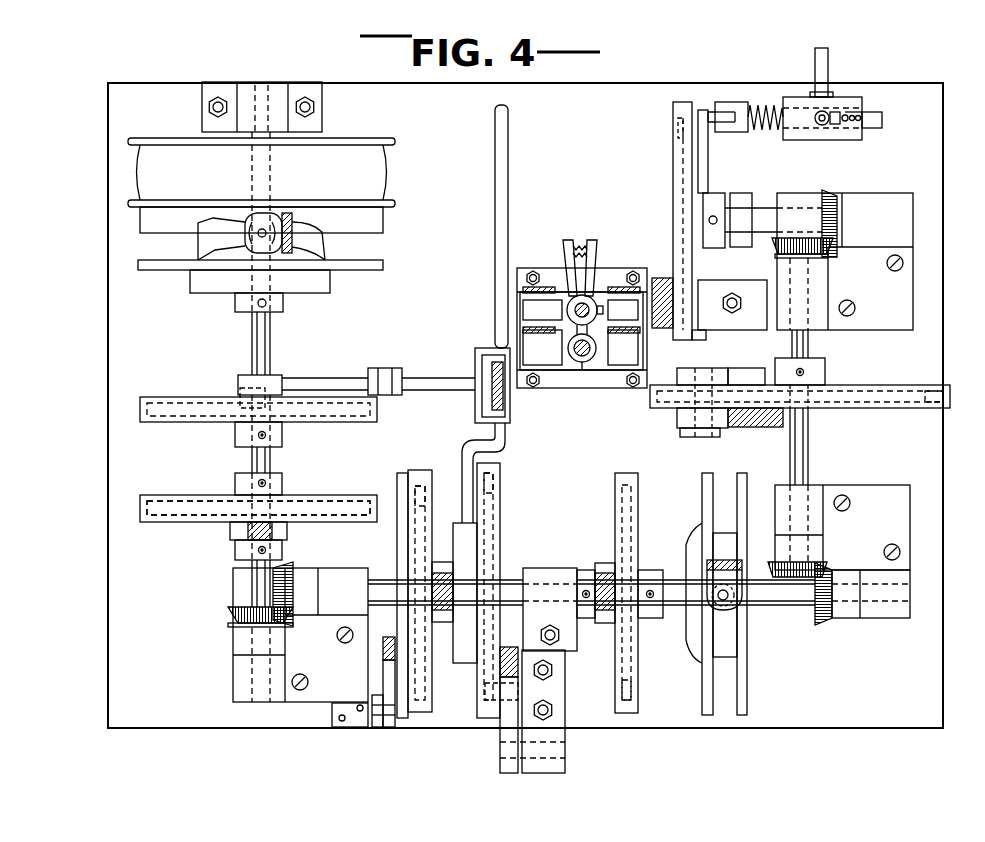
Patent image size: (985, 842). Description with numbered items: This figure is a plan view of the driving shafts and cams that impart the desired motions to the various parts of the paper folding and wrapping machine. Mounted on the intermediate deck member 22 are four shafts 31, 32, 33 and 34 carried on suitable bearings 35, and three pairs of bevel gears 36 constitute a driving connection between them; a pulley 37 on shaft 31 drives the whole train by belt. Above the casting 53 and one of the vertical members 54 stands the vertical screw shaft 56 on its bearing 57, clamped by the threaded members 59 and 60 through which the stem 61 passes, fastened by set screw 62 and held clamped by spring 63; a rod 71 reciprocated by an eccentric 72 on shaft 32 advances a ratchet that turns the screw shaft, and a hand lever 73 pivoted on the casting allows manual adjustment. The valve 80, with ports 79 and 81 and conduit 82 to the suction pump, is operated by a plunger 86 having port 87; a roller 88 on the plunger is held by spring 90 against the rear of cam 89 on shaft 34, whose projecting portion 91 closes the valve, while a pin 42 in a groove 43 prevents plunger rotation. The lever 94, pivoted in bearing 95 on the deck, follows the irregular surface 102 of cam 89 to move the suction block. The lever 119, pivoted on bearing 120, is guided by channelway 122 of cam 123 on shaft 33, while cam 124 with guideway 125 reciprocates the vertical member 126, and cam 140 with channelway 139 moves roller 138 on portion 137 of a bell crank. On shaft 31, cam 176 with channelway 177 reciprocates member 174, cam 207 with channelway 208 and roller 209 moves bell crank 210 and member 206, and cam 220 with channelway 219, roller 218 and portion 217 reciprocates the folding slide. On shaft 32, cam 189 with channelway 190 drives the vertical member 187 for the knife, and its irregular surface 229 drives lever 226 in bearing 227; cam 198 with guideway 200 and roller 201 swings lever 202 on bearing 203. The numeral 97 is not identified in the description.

The intermediate deck member 22 is at (525, 405).
The shaft 31 is at (252, 362).
The shaft 32 is at (760, 606).
The shaft 33 is at (809, 445).
The shaft 34 is at (760, 208).
The bearings 35 is at (285, 92).
The bevel gears 36 is at (272, 628).
The pulley 37 is at (148, 175).
The pin 42 is at (858, 114).
The groove 43 is at (870, 112).
The casting 53 is at (553, 388).
The vertical members 54 is at (527, 288).
The vertical screw shaft 56 is at (583, 362).
The bearing 57 is at (596, 352).
The clamping member 59 is at (596, 242).
The clamping member 60 is at (563, 242).
The stem 61 is at (567, 310).
The set screw 62 is at (605, 310).
The spring 63 is at (582, 245).
The rod 71 is at (495, 452).
The eccentric 72 is at (457, 663).
The hand lever 73 is at (495, 128).
The port 79 is at (822, 126).
The valve 80 is at (850, 140).
The port 81 is at (832, 112).
The conduit 82 is at (815, 65).
The plunger 86 is at (882, 126).
The port 87 is at (848, 115).
The roller 88 is at (723, 102).
The cam 89 is at (682, 102).
The spring 90 is at (760, 105).
The projecting portion 91 is at (705, 135).
The lever 94 is at (660, 278).
The bearing 95 is at (726, 330).
The slot 97 is at (675, 140).
The irregular surface 102 is at (699, 340).
The lever 119 is at (755, 427).
The bearing 120 is at (748, 385).
The channelway 122 is at (930, 403).
The cam 123 is at (950, 400).
The cam 124 is at (638, 675).
The guideway 125 is at (622, 688).
The vertical member 126 is at (602, 563).
The downwardly-extending portion 137 is at (720, 560).
The roller 138 is at (715, 605).
The channelway 139 is at (718, 715).
The cam 140 is at (748, 690).
The vertical member 174 is at (248, 530).
The cam 176 is at (163, 496).
The channelway 177 is at (150, 515).
The vertical member 187 is at (443, 622).
The cam 189 is at (420, 470).
The channelway 190 is at (430, 488).
The cam 198 is at (500, 525).
The guideway 200 is at (495, 480).
The roller 201 is at (490, 705).
The lever 202 is at (498, 740).
The bearing 203 is at (565, 742).
The vertically-movable member 206 is at (492, 398).
The cam 207 is at (160, 422).
The channelway 208 is at (148, 402).
The roller 209 is at (240, 400).
The bell crank 210 is at (345, 378).
The downwardly-extending portion 217 is at (293, 233).
The roller 218 is at (248, 232).
The channelway 219 is at (352, 262).
The cam 220 is at (378, 224).
The lever 226 is at (386, 637).
The bearing 227 is at (358, 728).
The irregular surface 229 is at (401, 473).